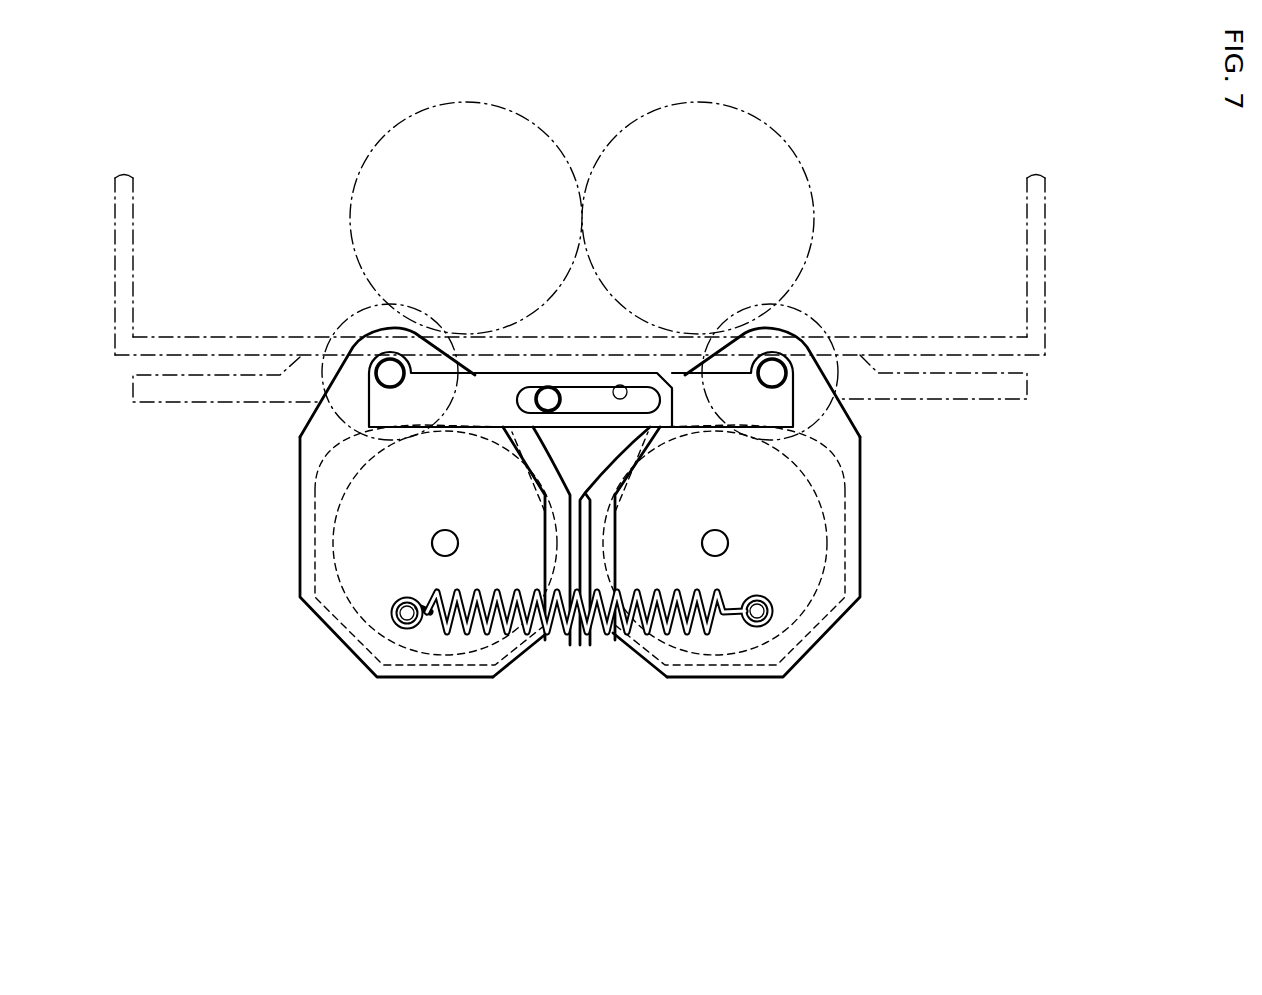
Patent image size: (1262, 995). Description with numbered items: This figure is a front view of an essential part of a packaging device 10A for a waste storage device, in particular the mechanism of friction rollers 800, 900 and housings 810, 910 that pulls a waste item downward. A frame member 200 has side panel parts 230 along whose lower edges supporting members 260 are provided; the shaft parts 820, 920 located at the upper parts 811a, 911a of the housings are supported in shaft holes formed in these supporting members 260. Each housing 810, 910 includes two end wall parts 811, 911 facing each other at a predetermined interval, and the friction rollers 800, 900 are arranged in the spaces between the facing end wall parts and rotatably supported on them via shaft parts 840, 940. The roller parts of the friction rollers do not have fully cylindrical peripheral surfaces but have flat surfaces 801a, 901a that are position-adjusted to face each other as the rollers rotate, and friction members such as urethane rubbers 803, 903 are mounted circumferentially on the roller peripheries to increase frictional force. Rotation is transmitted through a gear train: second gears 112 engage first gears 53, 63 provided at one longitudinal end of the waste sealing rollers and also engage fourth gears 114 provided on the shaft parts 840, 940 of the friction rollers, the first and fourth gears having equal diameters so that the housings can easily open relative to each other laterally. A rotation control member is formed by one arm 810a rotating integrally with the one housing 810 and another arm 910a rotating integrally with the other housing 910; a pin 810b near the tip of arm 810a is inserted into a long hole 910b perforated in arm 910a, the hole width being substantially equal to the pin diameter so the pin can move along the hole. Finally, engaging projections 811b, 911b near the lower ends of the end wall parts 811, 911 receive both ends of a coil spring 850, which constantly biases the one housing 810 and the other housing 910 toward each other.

The packaging device 10A is at (905, 132).
The first gear 63 is at (402, 148).
The first gear 53 is at (770, 147).
The second gear 112 is at (367, 312).
The fourth gear 114 is at (323, 612).
The frame member 200 is at (636, 337).
The side panel part 230 is at (1016, 313).
The supporting member 260 is at (167, 393).
The housing 910 is at (443, 523).
The end wall part 911 is at (308, 505).
The upper part 911a is at (385, 338).
The engaging projection 911b is at (393, 618).
The shaft part 920 is at (388, 370).
The shaft part 940 is at (443, 547).
The rubber 903 is at (530, 407).
The arm 910a is at (505, 432).
The long hole 910b is at (622, 389).
The friction roller 900 is at (537, 652).
The flat surface 901a is at (574, 555).
The housing 810 is at (741, 512).
The end wall part 811 is at (857, 554).
The upper part 811a is at (795, 345).
The engaging projection 811b is at (765, 617).
The shaft part 820 is at (775, 371).
The shaft part 840 is at (717, 543).
The rubber 803 is at (608, 470).
The arm 810a is at (677, 410).
The pin 810b is at (548, 396).
The friction roller 800 is at (628, 648).
The flat surface 801a is at (586, 555).
The coil spring 850 is at (443, 636).